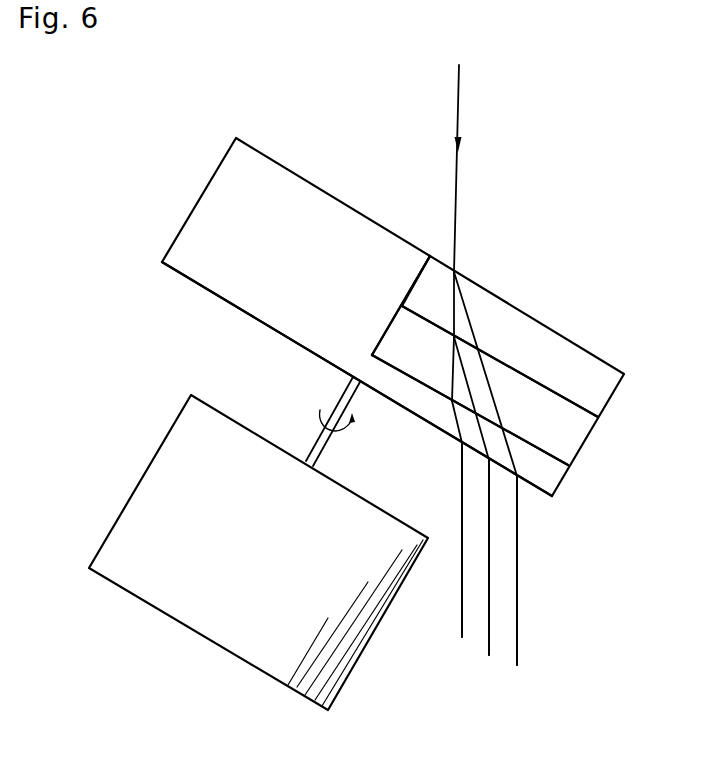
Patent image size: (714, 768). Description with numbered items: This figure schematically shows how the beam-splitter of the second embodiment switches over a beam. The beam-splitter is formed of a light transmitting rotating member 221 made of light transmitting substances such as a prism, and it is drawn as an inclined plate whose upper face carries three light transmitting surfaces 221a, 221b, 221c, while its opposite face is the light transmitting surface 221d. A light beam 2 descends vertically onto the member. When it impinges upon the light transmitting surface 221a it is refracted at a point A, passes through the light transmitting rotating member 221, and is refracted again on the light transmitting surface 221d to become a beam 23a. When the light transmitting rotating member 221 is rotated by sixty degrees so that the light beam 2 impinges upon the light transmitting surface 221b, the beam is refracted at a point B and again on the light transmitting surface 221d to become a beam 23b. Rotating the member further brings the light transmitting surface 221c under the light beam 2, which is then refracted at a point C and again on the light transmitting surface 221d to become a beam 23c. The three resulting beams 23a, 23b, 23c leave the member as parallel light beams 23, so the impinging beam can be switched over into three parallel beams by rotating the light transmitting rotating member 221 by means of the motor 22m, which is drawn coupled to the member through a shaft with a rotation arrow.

The light beam 2 is at (460, 118).
The point A is at (454, 272).
The point B is at (454, 337).
The point C is at (452, 401).
The light transmitting rotating member 221 is at (547, 482).
The light transmitting surface 221a is at (600, 357).
The light transmitting surface 221b is at (578, 410).
The light transmitting surface 221c is at (557, 462).
The light transmitting surface 221d is at (462, 443).
The motor 22m is at (118, 540).
The parallel light beams 23 is at (527, 705).
The beam 23a is at (494, 488).
The beam 23b is at (481, 506).
The beam 23c is at (455, 573).